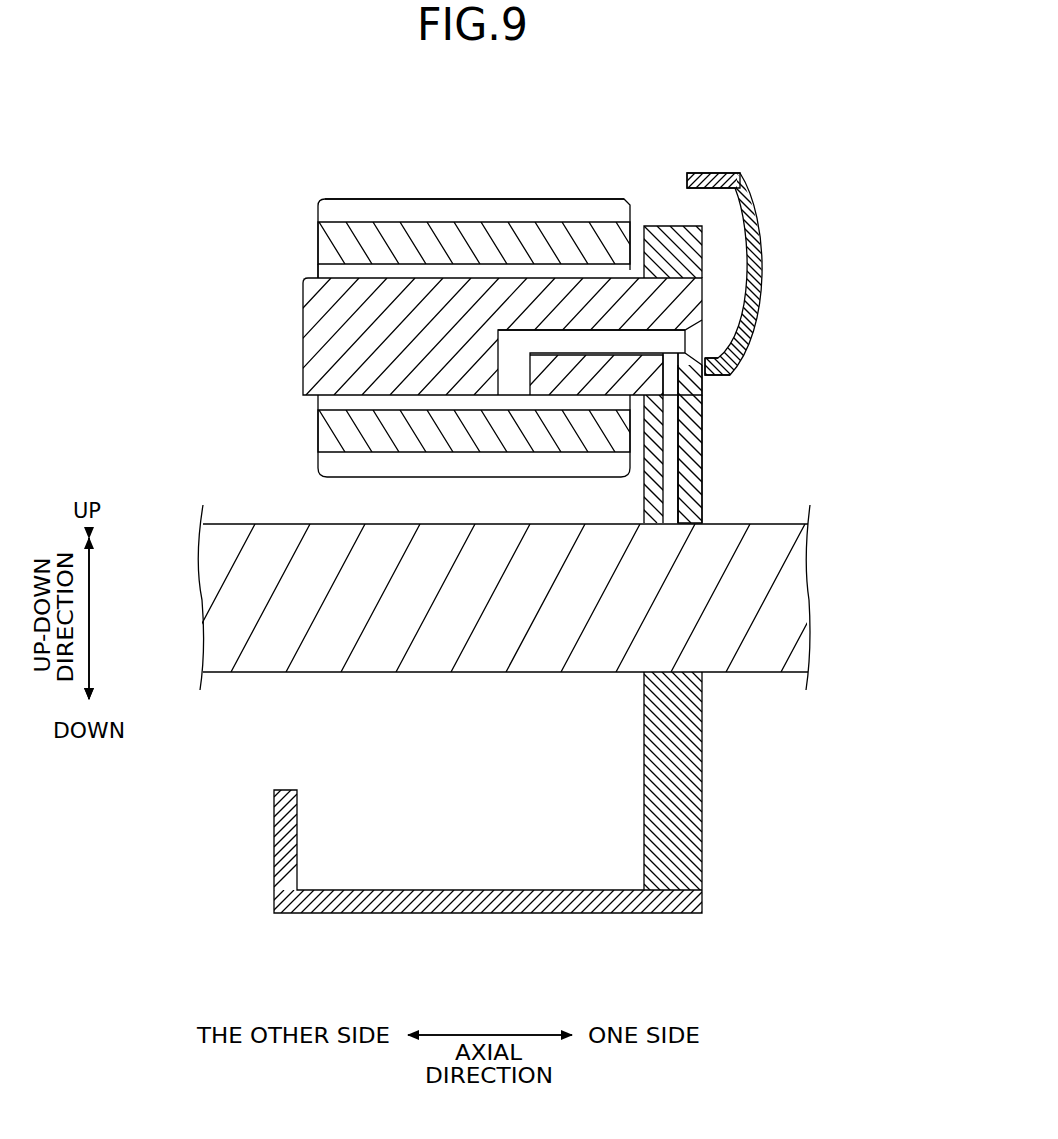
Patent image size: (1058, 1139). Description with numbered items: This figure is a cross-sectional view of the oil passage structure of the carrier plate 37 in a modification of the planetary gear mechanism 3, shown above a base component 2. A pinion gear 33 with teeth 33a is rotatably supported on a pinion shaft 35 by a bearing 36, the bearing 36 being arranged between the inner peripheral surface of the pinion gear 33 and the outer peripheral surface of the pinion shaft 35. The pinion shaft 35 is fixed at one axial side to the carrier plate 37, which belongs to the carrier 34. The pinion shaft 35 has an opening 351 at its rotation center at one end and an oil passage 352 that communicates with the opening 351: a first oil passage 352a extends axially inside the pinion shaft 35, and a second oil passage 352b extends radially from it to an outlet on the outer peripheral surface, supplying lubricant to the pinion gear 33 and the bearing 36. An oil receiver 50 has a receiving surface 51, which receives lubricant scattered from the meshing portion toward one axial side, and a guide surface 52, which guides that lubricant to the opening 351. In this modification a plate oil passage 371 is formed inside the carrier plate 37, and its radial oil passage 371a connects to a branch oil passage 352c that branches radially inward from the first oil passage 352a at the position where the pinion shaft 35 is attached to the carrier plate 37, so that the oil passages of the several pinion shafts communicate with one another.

The base 2 is at (790, 598).
The planetary gear mechanism 3 is at (553, 304).
The pinion gear 33 is at (318, 238).
The teeth 33a is at (371, 207).
The carrier 34 is at (710, 775).
The pinion shaft 35 is at (298, 321).
The bearing 36 is at (328, 272).
The carrier plate 37 is at (710, 374).
The oil receiver 50 is at (734, 240).
The receiving surface 51 is at (692, 200).
The guide surface 52 is at (745, 248).
The opening 351 is at (703, 340).
The oil passage 352 is at (557, 282).
The first oil passage 352a is at (572, 348).
The second oil passage 352b is at (508, 378).
The branch oil passage 352c is at (668, 379).
The plate oil passage 371 is at (710, 438).
The radial oil passage 371a is at (670, 428).